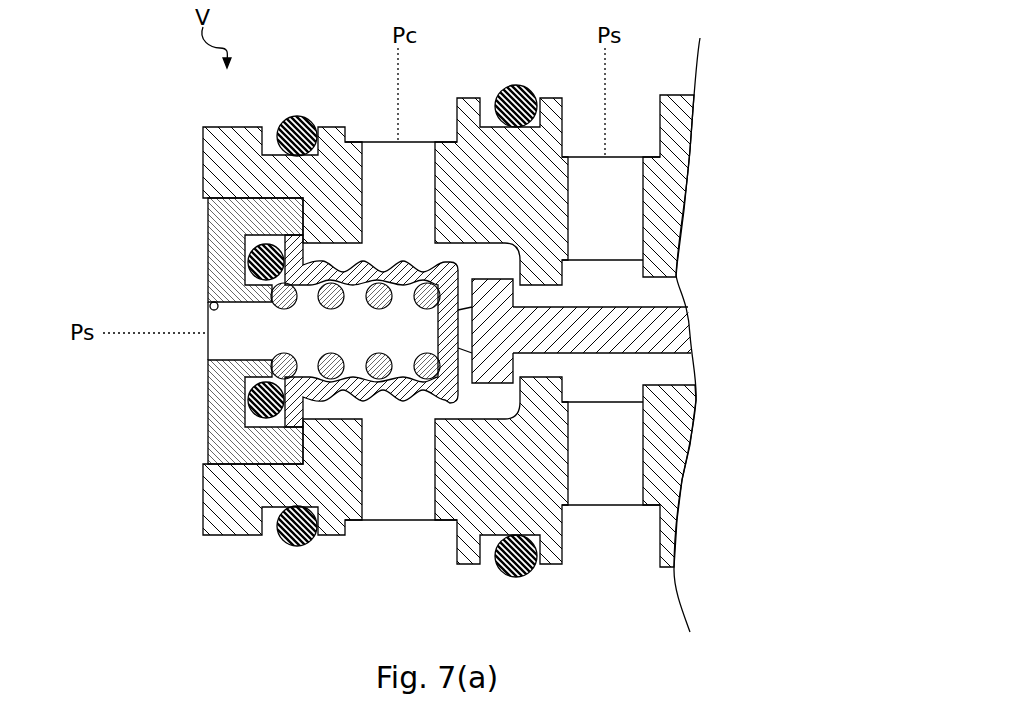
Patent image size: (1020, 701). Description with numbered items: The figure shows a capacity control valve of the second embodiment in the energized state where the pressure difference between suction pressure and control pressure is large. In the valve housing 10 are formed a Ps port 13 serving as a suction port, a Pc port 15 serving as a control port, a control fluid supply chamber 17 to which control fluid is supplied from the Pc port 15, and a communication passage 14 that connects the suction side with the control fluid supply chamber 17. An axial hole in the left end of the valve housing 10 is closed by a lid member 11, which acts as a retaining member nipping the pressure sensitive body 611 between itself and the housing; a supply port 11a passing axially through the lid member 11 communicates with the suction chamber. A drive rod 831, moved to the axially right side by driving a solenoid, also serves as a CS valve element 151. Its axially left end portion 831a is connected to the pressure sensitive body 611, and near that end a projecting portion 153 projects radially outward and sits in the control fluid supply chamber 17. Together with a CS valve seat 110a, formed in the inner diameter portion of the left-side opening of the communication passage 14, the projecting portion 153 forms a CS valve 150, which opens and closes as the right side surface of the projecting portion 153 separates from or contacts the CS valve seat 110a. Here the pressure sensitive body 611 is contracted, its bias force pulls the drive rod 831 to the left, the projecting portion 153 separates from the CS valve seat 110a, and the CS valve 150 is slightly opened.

The valve housing 10 is at (218, 128).
The lid member 11 is at (215, 400).
The supply port 11a is at (212, 304).
The Ps port 13 is at (572, 203).
The communication passage 14 is at (547, 285).
The Pc port 15 is at (435, 203).
The control fluid supply chamber 17 is at (370, 255).
The CS valve element 151 is at (588, 348).
The drive rod 831 is at (658, 358).
The axially left end portion of the drive rod 831a is at (517, 383).
The pressure sensitive body 611 is at (358, 404).
The projecting portion 153 is at (505, 392).
The CS valve seat 110a is at (520, 395).
The CS valve 150 is at (672, 594).